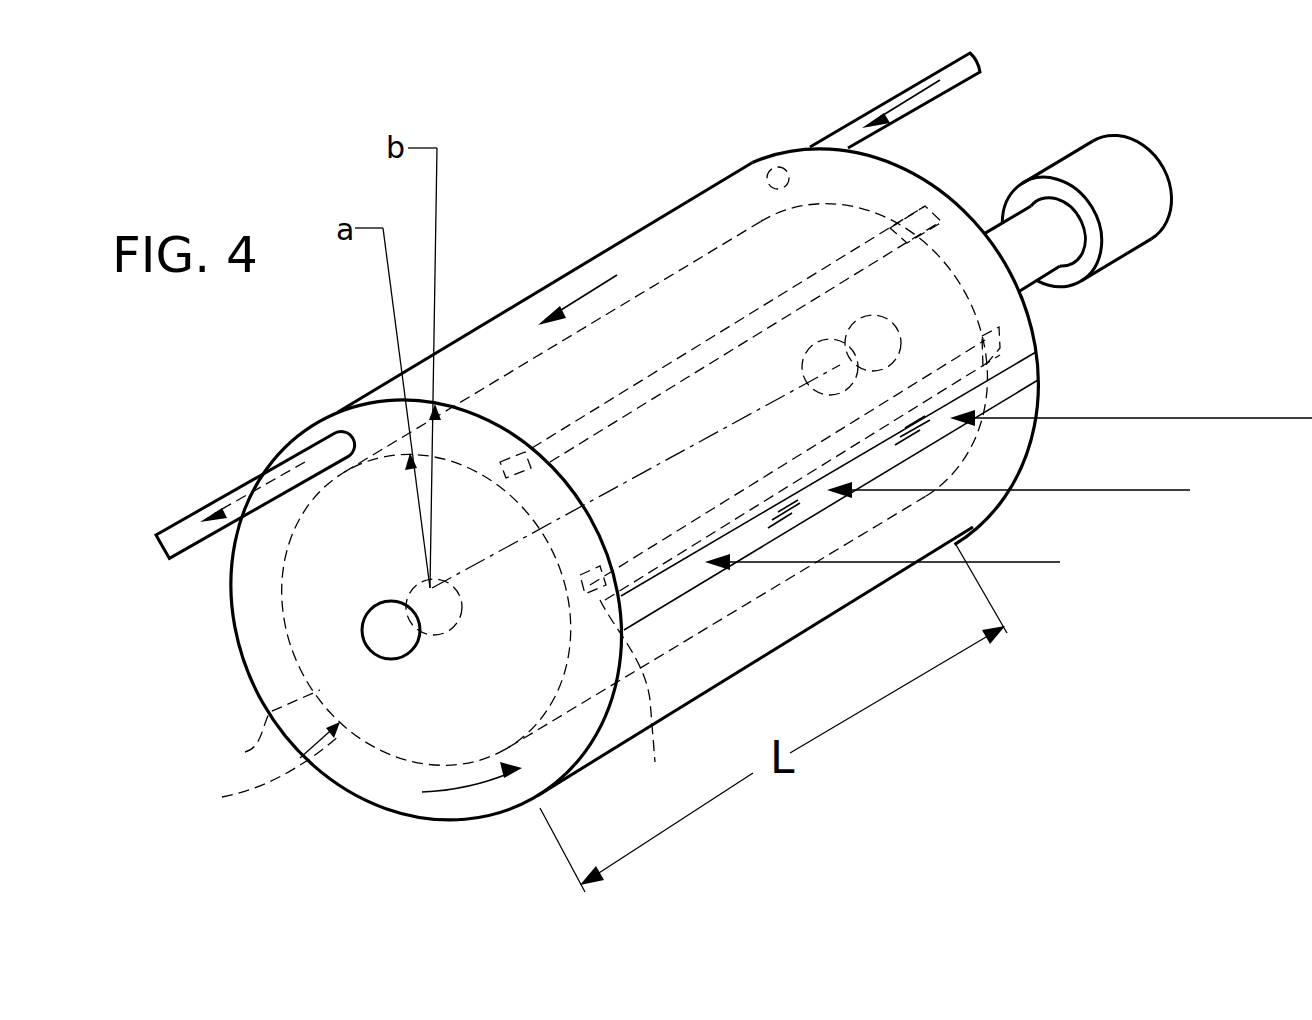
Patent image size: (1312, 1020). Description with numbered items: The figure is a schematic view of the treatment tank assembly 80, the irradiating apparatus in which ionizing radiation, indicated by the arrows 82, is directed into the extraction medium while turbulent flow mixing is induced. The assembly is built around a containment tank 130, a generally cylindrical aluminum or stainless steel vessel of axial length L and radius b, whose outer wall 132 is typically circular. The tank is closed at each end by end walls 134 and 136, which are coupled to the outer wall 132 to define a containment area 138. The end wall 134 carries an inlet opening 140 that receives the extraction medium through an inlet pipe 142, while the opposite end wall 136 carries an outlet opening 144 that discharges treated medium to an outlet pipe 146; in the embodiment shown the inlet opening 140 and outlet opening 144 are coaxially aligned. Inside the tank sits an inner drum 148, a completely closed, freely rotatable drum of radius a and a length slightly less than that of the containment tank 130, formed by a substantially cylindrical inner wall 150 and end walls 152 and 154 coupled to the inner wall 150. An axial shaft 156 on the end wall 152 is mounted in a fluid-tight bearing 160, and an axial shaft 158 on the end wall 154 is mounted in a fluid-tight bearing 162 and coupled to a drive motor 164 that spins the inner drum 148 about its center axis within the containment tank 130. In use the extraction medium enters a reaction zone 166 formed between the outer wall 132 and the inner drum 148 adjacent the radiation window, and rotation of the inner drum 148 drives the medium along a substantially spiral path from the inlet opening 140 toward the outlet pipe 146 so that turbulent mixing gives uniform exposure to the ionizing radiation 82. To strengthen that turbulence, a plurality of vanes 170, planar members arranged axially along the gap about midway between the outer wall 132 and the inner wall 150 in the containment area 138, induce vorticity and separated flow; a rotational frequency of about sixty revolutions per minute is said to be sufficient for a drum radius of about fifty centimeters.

The treatment tank assembly 80 is at (662, 172).
The ionizing radiation 82 is at (1130, 418).
The containment tank 130 is at (570, 258).
The outer wall 132 is at (505, 310).
The end wall 134 is at (980, 230).
The end wall 136 is at (240, 626).
The containment area 138 is at (245, 752).
The inlet opening 140 is at (768, 168).
The inlet pipe 142 is at (933, 74).
The outlet opening 144 is at (340, 410).
The outlet pipe 146 is at (236, 478).
The inner drum 148 is at (240, 793).
The inner wall 150 is at (673, 270).
The end wall 152 is at (380, 770).
The end wall 154 is at (905, 212).
The axial shaft 156 is at (455, 635).
The axial shaft 158 is at (1020, 268).
The fluid-tight bearing 160 is at (390, 652).
The fluid-tight bearing 162 is at (802, 385).
The drive motor 164 is at (1160, 150).
The reaction zone 166 is at (819, 574).
The vanes 170 is at (935, 205).